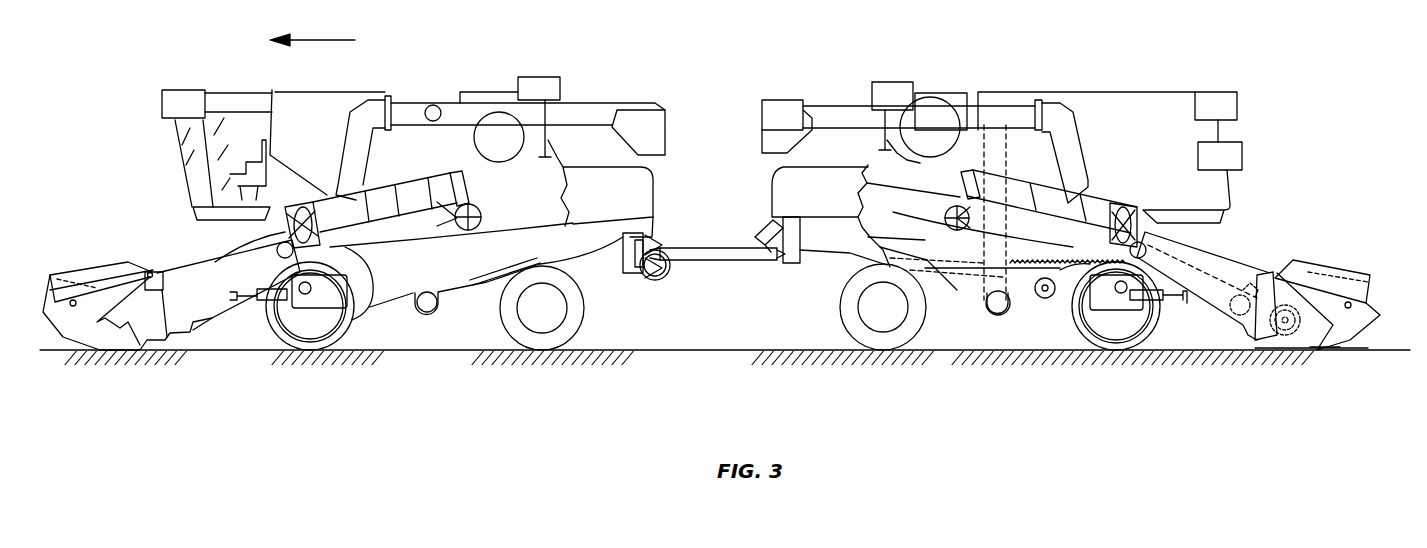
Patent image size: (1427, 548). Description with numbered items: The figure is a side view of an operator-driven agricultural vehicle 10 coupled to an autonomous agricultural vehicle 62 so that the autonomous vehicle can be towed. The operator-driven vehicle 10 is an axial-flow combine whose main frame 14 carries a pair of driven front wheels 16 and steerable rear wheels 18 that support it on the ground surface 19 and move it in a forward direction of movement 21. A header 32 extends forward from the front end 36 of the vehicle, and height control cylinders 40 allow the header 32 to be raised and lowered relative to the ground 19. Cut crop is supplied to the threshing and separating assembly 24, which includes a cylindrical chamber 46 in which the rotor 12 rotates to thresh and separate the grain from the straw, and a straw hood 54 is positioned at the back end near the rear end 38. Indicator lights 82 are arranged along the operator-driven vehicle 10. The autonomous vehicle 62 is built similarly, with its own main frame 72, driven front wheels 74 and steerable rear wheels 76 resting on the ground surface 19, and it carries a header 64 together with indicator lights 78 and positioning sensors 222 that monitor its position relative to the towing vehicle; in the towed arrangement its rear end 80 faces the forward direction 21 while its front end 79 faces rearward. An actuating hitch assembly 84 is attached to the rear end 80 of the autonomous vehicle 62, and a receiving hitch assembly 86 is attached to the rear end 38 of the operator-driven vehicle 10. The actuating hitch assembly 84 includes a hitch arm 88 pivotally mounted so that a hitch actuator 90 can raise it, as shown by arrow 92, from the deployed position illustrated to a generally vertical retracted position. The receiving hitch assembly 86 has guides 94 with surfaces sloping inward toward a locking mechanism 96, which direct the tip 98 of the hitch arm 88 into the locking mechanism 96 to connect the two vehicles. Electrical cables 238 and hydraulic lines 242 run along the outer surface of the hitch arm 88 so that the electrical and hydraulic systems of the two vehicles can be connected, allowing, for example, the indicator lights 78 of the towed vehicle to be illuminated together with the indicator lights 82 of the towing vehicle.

The operator-driven agricultural vehicle 10 is at (266, 86).
The rotor 12 is at (298, 202).
The main frame 14 is at (545, 264).
The front wheels 16 is at (267, 338).
The rear wheels 18 is at (578, 313).
The ground surface 19 is at (1365, 348).
The forward direction of movement 21 is at (294, 39).
The threshing and separating assembly 24 is at (357, 187).
The header 32 is at (71, 270).
The front end 36 is at (115, 170).
The rear end 38 is at (660, 165).
The height control cylinders 40 is at (252, 320).
The cylindrical chamber 46 is at (405, 186).
The straw hood 54 is at (655, 215).
The autonomous agricultural vehicle 62 is at (949, 94).
The second header 64 is at (1375, 262).
The main frame 72 is at (880, 260).
The front wheels 74 is at (1060, 335).
The rear wheels 76 is at (842, 316).
The indicator lights 78 is at (885, 82).
The front end 79 is at (1298, 211).
The rear end 80 is at (760, 164).
The indicator lights 82 is at (161, 102).
The actuating hitch assembly 84 is at (787, 267).
The receiving hitch assembly 86 is at (637, 276).
The hitch arm 88 is at (731, 262).
The hitch actuator 90 is at (760, 226).
The arrow 92 is at (673, 242).
The guides 94 is at (705, 200).
The locking mechanism 96 is at (640, 276).
The tip 98 is at (648, 284).
The positioning sensors 222 is at (790, 100).
The electrical cables 238 is at (665, 265).
The hydraulic lines 242 is at (677, 272).